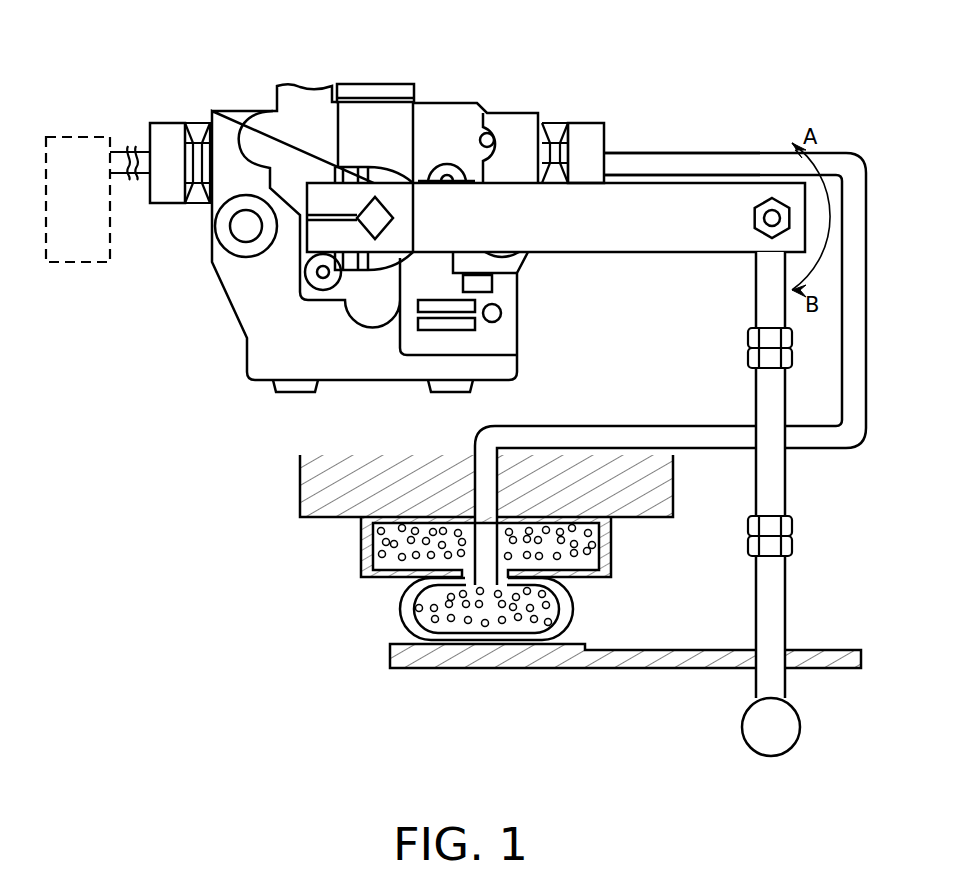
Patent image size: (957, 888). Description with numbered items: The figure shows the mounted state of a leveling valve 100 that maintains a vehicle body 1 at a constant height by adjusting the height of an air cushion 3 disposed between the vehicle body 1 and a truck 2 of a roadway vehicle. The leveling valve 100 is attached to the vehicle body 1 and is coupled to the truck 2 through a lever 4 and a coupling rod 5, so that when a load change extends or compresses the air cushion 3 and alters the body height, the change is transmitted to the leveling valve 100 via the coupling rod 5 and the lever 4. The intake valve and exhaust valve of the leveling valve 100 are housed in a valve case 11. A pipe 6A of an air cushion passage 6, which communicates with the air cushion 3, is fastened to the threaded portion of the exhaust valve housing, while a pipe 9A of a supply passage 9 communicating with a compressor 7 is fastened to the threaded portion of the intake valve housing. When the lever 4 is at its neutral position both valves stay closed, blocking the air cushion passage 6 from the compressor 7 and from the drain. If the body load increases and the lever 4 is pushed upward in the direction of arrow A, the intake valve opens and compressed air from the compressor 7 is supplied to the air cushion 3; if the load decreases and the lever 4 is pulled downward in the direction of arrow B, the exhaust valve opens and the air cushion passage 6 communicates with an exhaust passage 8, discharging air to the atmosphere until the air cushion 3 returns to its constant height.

The leveling valve 100 is at (523, 85).
The compressor 7 is at (90, 137).
The pipe 9A is at (134, 150).
The supply passage 9 is at (136, 178).
The valve case 11 is at (233, 117).
The exhaust passage 8 is at (447, 175).
The lever 4 is at (635, 212).
The air cushion passage 6 is at (730, 166).
The pipe 6A is at (687, 166).
The coupling rod 5 is at (786, 485).
The vehicle body 1 is at (305, 486).
The air cushion 3 is at (370, 547).
The truck 2 is at (437, 668).